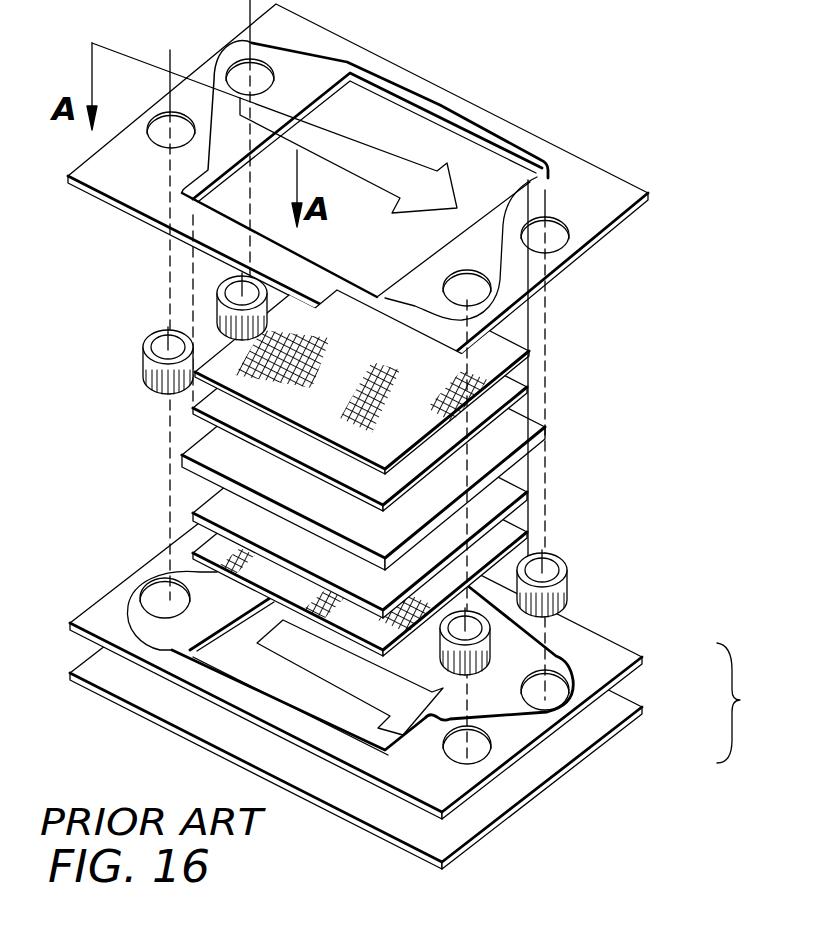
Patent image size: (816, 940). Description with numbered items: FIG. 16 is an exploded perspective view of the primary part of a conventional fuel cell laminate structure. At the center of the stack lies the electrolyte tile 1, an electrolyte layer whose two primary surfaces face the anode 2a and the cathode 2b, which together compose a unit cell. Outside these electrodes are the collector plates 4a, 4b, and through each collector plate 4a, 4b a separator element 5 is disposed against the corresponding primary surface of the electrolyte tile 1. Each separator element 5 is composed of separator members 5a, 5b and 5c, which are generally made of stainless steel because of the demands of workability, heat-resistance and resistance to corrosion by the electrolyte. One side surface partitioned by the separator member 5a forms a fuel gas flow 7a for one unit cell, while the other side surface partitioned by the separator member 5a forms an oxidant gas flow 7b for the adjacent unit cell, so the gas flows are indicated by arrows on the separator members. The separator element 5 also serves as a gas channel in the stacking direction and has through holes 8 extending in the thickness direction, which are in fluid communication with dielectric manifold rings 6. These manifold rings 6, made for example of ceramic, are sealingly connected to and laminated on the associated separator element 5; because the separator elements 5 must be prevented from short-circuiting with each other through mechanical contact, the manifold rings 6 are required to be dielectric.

The electrolyte tile 1 is at (522, 427).
The anode 2a is at (500, 492).
The cathode 2b is at (507, 387).
The collector plate 4a is at (513, 532).
The collector plate 4b is at (513, 342).
The separator element 5 is at (740, 703).
The separator member 5a is at (600, 658).
The separator member 5b is at (588, 187).
The separator member 5c is at (557, 688).
The dielectric manifold ring 6 is at (145, 343).
The fuel gas flow 7a is at (212, 740).
The oxidant gas flow 7b is at (388, 158).
The through holes 8 is at (241, 75).